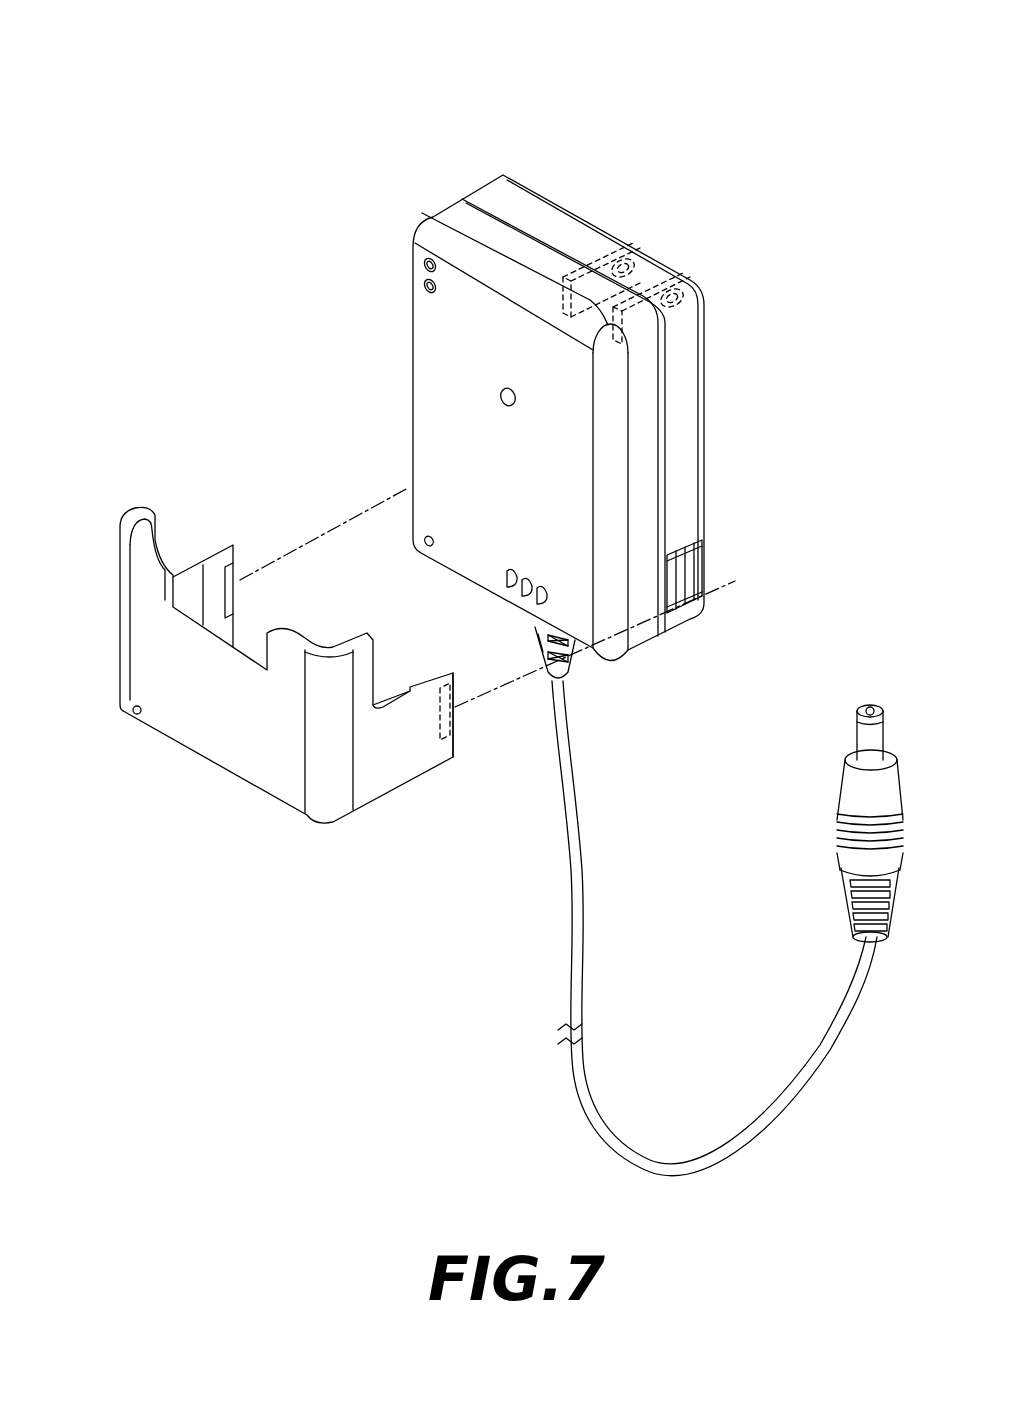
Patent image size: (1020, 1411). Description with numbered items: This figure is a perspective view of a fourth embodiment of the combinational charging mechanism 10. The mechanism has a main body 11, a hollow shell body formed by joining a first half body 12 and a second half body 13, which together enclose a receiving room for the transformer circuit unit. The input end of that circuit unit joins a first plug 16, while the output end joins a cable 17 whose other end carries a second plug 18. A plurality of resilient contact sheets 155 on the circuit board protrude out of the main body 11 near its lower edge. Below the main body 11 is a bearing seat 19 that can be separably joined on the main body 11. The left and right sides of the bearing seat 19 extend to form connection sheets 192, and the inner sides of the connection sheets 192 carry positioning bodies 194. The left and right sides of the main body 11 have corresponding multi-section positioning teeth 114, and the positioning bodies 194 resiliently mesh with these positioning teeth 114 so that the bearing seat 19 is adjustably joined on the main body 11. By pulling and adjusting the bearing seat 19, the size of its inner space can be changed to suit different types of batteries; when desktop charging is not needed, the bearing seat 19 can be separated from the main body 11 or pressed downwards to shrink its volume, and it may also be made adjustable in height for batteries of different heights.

The combinational charging mechanism 10 is at (536, 108).
The main body 11 is at (454, 166).
The first half body 12 is at (430, 348).
The second half body 13 is at (511, 185).
The first plug 16 is at (706, 317).
The cable 17 is at (790, 1112).
The second plug 18 is at (845, 850).
The bearing seat 19 is at (142, 652).
The multi-section positioning teeth 114 is at (698, 574).
The resilient contact sheets 155 is at (510, 589).
The connection sheets 192 is at (423, 764).
The positioning bodies 194 is at (443, 688).